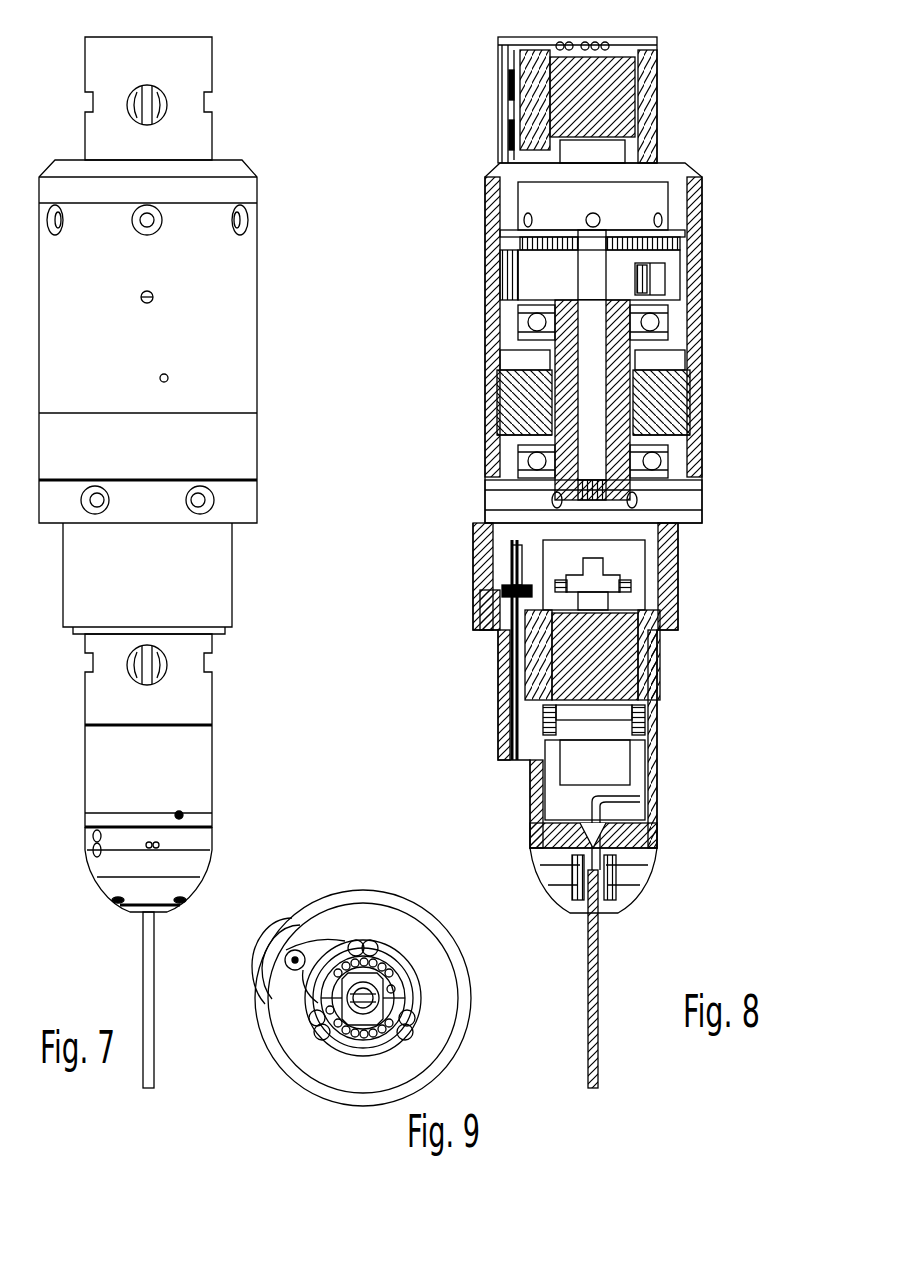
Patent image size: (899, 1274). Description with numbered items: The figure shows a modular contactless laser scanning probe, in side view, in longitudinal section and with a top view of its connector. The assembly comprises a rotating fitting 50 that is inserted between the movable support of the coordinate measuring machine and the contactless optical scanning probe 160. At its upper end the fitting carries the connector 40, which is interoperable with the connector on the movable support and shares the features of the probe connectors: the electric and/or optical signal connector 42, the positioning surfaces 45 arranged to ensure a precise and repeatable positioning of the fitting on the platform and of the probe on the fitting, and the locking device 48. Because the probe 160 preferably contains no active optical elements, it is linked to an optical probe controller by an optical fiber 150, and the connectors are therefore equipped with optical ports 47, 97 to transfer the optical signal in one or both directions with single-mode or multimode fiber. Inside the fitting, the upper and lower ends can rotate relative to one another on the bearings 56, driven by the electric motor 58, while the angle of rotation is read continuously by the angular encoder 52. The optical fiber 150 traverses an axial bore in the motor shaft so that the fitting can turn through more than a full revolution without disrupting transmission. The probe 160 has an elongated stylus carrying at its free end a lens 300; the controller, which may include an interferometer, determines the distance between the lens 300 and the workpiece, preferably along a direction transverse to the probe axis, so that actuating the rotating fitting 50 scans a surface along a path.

In FIG. 7, the connector 40 is at (212, 48).
In FIG. 8, the connector 40 is at (657, 50).
In FIG. 9, the connector 40 is at (407, 874).
In FIG. 8, the electric and/or optical signal connector 42 is at (668, 630).
In FIG. 9, the electric and/or optical signal connector 42 is at (357, 1042).
In FIG. 9, the positioning surfaces 45 is at (322, 1032).
In FIG. 8, the optical port 47 is at (500, 57).
In FIG. 9, the optical port 47 is at (297, 948).
In FIG. 9, the locking device 48 is at (387, 993).
In FIG. 7, the rotating fitting 50 is at (257, 306).
In FIG. 8, the rotating fitting 50 is at (703, 227).
In FIG. 8, the angular encoder 52 is at (653, 277).
In FIG. 8, the bearings 56 is at (537, 323).
In FIG. 8, the electric motor 58 is at (523, 405).
In FIG. 8, the optical port 97 is at (503, 575).
In FIG. 8, the optical fiber 150 is at (598, 817).
In FIG. 7, the contactless optical scanning probe 160 is at (212, 774).
In FIG. 7, the lens 300 is at (148, 1092).